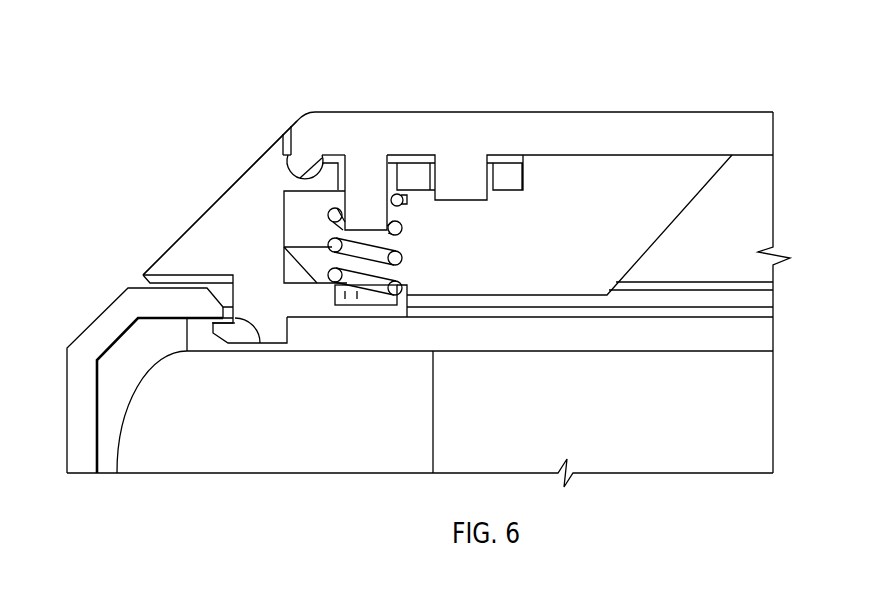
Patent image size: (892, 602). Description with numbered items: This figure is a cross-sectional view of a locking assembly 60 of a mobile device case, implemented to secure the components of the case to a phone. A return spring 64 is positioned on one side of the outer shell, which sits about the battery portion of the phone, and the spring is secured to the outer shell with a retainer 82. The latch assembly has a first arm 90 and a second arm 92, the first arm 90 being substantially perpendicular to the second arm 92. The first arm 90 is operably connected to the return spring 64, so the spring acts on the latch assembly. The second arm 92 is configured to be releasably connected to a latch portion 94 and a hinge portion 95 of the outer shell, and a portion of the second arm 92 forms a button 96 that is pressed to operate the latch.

The locking assembly 60 is at (520, 72).
The retainer 82 is at (359, 193).
The return spring 64 is at (397, 195).
The hinge portion 95 is at (287, 162).
The button 96 is at (222, 192).
The second arm 92 is at (250, 247).
The latch portion 94 is at (242, 317).
The first arm 90 is at (308, 305).